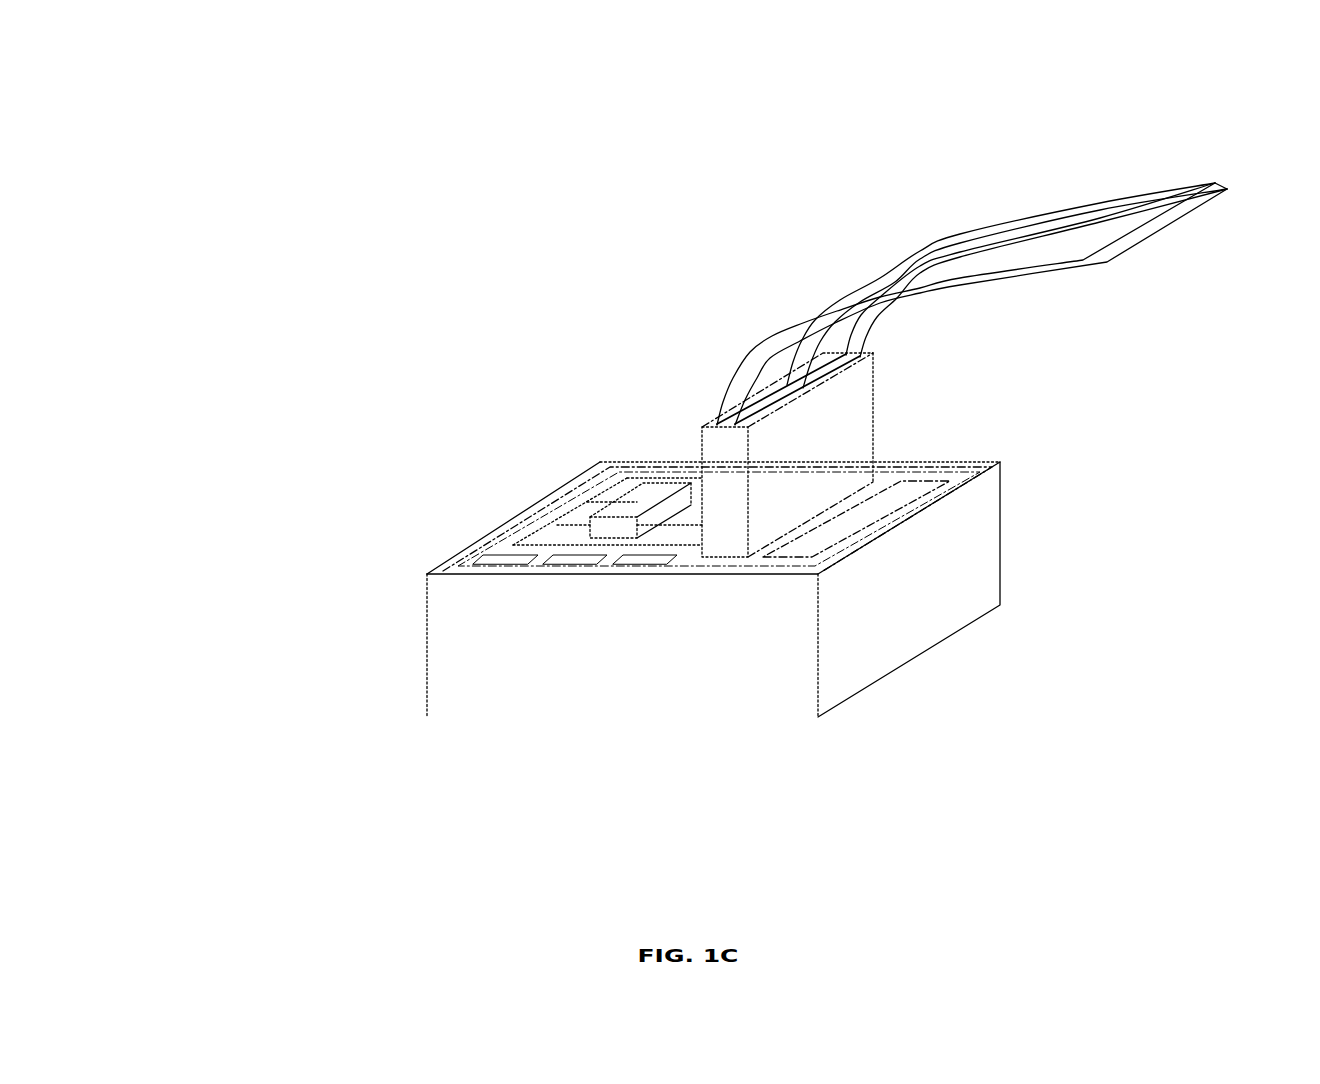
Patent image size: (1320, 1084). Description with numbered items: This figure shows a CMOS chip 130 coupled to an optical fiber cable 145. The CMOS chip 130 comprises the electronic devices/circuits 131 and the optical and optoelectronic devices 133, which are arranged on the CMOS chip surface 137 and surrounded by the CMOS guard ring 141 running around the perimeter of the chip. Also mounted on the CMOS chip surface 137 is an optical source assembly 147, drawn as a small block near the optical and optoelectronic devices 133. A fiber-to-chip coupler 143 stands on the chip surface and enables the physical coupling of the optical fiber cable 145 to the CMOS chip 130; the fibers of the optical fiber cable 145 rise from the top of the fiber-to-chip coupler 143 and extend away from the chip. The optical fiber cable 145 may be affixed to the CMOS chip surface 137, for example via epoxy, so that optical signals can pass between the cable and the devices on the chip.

The CMOS chip 130 is at (270, 122).
The electronic devices/circuits 131 is at (642, 587).
The optical and optoelectronic devices 133 is at (542, 526).
The CMOS chip surface 137 is at (569, 504).
The CMOS guard ring 141 is at (978, 534).
The fiber-to-chip coupler 143 is at (874, 385).
The optical fiber cable 145 is at (909, 241).
The optical source assembly 147 is at (647, 488).